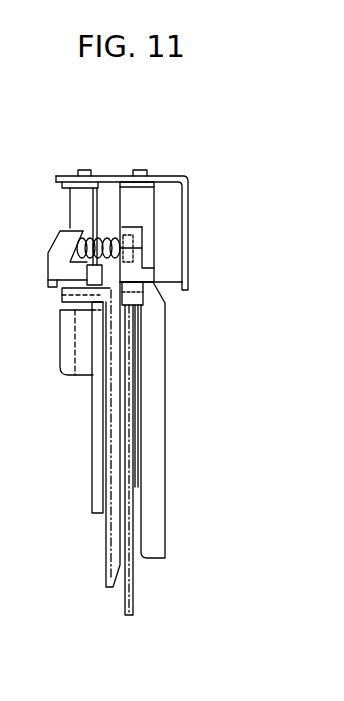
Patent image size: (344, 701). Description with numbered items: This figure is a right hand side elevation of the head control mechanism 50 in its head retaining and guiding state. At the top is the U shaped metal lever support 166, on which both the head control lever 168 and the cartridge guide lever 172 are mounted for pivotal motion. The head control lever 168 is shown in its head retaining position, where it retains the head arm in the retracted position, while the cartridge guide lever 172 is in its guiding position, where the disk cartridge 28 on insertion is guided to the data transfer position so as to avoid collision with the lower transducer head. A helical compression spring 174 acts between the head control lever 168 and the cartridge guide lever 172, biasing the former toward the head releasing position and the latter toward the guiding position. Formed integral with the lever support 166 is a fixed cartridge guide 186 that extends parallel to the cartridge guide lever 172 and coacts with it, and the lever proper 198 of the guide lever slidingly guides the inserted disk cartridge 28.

The head control mechanism 50 is at (188, 160).
The lever support 166 is at (161, 172).
The helical compression spring 174 is at (76, 230).
The head control lever 168 is at (90, 399).
The fixed cartridge guide 186 is at (110, 533).
The lever proper 198 is at (153, 492).
The flexible magnetic disk cartridge 28 is at (137, 570).
The cartridge guide lever 172 is at (168, 436).